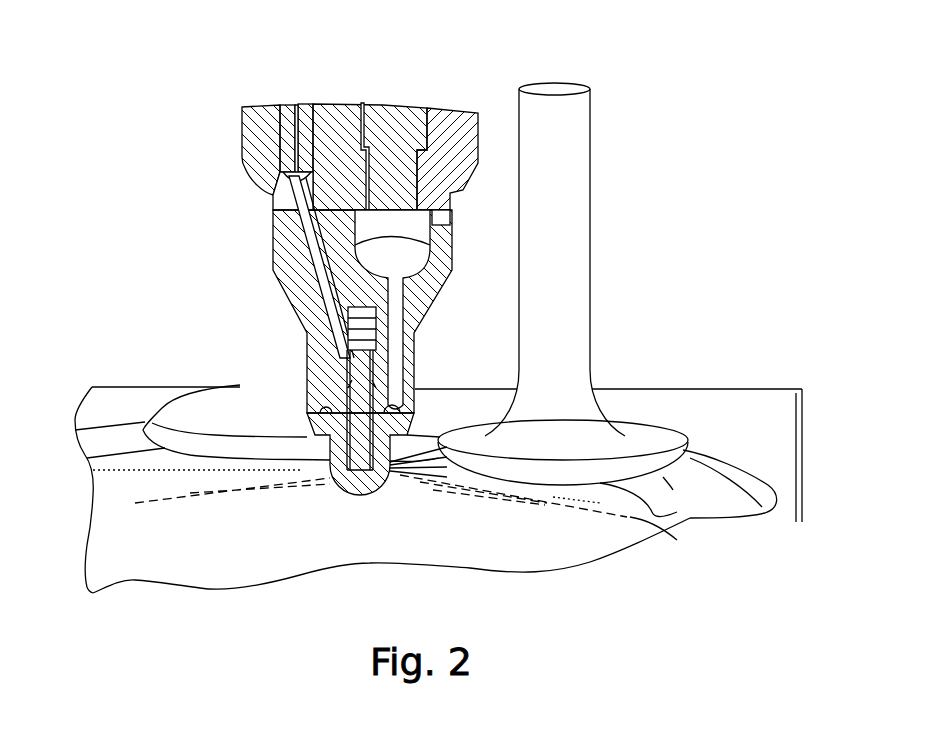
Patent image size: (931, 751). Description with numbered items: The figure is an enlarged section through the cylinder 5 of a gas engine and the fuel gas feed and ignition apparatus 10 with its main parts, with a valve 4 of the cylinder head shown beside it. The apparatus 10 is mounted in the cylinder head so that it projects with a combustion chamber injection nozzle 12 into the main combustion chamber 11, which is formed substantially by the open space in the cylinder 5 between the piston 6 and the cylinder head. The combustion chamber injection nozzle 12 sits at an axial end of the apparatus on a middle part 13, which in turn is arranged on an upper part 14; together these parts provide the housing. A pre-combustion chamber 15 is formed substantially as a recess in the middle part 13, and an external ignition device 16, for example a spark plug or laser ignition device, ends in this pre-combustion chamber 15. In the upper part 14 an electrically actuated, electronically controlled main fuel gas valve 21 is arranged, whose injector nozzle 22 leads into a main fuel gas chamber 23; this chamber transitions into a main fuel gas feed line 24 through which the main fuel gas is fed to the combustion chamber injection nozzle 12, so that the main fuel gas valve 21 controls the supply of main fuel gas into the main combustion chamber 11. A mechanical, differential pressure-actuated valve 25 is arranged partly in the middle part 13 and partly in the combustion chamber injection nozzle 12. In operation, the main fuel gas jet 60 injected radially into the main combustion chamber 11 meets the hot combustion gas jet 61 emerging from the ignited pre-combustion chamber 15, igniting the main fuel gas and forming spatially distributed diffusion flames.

The valve 4 is at (553, 175).
The cylinder 5 is at (787, 470).
The piston 6 is at (713, 507).
The fuel gas feed and ignition apparatus 10 is at (393, 264).
The main combustion chamber 11 is at (697, 497).
The combustion chamber injection nozzle 12 is at (398, 402).
The middle part 13 is at (290, 270).
The upper part 14 is at (450, 147).
The pre-combustion chamber 15 is at (412, 264).
The external ignition device 16 is at (393, 143).
The main fuel gas valve 21 is at (240, 123).
The injector nozzle 22 is at (262, 160).
The main fuel gas chamber 23 is at (248, 192).
The main fuel gas feed line 24 is at (357, 314).
The mechanical differential pressure-actuated valve 25 is at (338, 362).
The main fuel gas jet 60 is at (113, 483).
The combustion gas jet 61 is at (168, 460).